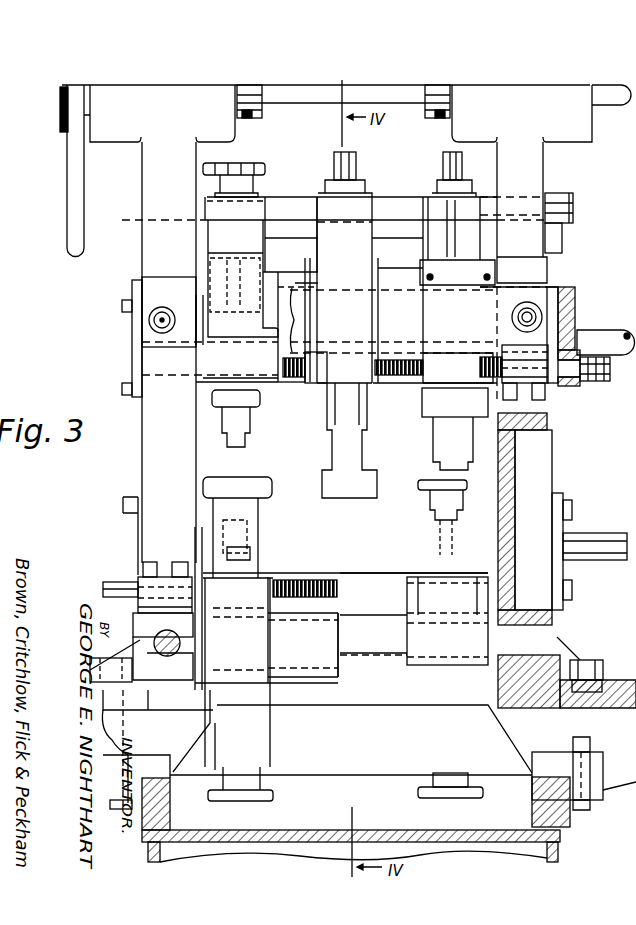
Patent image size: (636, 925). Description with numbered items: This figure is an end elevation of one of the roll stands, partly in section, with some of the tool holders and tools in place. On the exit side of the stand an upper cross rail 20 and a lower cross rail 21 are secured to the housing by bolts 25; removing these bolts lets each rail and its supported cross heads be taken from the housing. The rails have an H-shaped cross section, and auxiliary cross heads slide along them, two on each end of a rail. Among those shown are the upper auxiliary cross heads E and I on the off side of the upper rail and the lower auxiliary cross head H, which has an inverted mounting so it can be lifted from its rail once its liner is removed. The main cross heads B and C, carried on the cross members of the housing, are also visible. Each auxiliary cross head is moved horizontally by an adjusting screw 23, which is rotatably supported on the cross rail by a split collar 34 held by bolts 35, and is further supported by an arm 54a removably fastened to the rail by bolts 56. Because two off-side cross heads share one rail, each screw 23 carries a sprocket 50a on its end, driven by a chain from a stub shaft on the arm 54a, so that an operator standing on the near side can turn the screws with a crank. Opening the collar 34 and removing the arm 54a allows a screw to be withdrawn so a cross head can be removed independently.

The upper cross rail 20 is at (409, 322).
The lower cross rail 21 is at (313, 650).
The adjusting screws 23 is at (391, 385).
The bolts 25 is at (532, 316).
The split collar 34 is at (137, 605).
The bolts 35 is at (181, 562).
The sprocket 50a is at (588, 381).
The arm 54a is at (577, 320).
The bolts 56 is at (577, 295).
The main cross head B is at (260, 196).
The auxiliary cross head E is at (370, 196).
The auxiliary cross head I is at (422, 212).
The auxiliary cross head H is at (252, 690).
The main cross head C is at (420, 690).